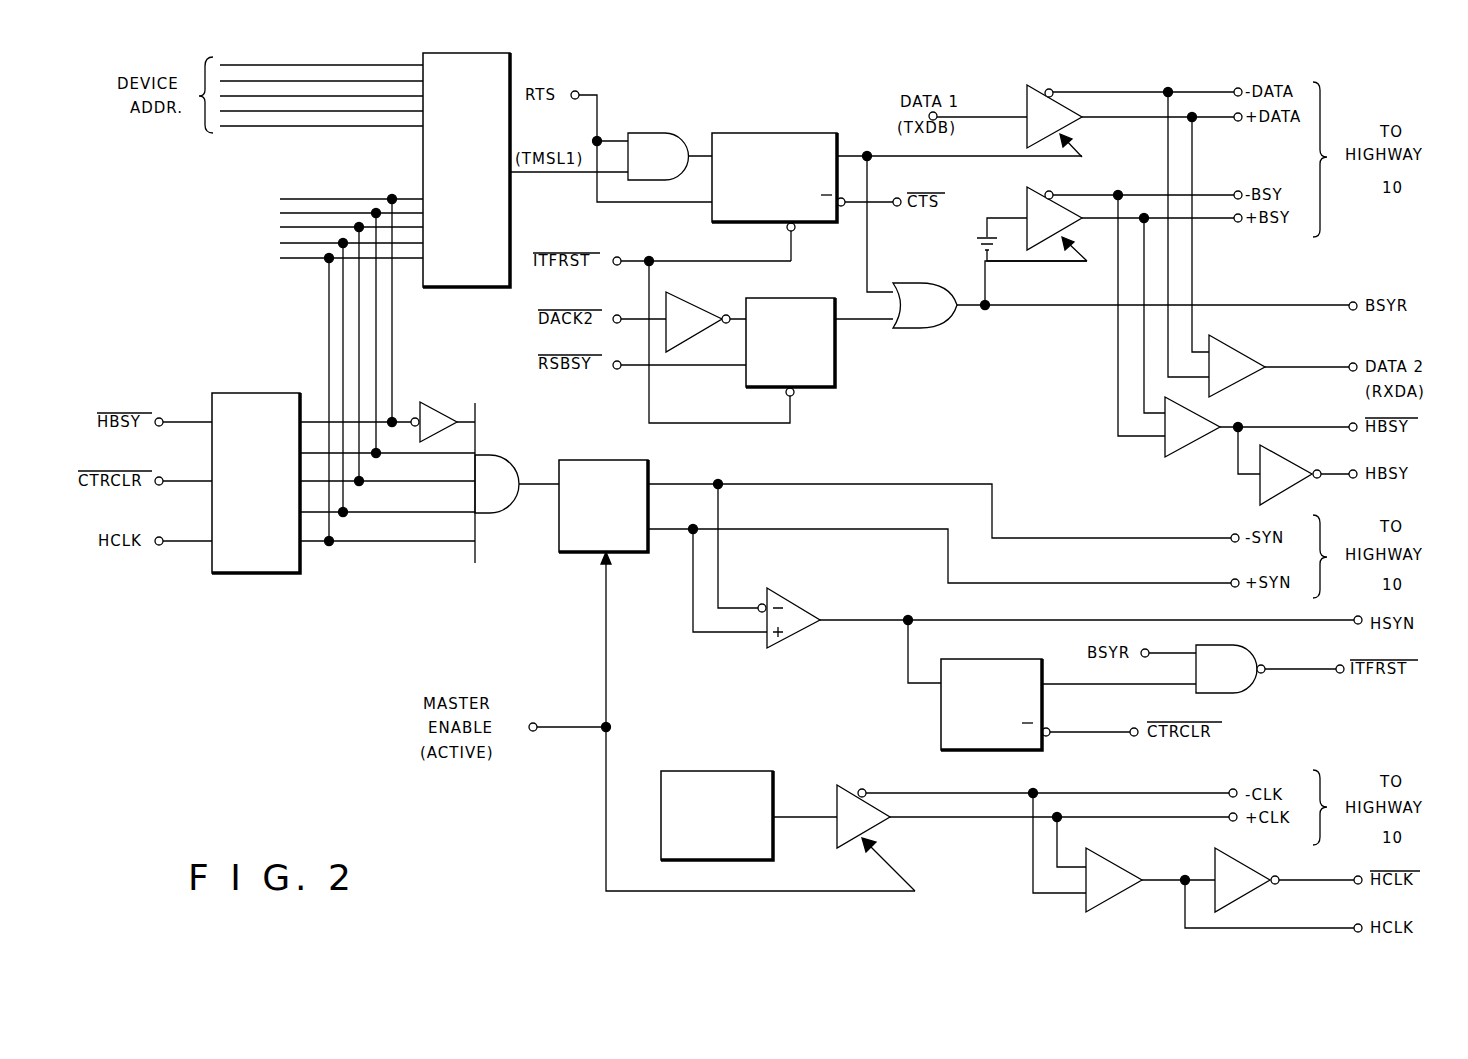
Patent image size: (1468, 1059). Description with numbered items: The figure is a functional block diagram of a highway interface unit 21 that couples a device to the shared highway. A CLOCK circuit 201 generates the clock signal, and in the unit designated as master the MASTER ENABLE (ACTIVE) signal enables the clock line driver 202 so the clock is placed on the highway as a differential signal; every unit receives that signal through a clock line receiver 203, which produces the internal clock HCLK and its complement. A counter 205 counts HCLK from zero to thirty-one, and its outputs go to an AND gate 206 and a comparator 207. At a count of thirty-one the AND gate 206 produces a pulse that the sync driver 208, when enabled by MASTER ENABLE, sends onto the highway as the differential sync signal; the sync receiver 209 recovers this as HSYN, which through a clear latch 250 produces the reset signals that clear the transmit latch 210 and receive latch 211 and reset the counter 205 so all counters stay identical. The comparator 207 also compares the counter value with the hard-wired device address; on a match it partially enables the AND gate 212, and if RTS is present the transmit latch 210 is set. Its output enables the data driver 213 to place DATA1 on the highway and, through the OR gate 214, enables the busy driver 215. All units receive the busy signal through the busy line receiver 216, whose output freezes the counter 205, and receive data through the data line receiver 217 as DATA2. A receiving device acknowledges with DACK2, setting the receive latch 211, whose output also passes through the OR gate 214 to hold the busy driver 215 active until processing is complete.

The highway interface unit 21 is at (655, 66).
The CLOCK circuit 201 is at (727, 771).
The clock line driver 202 is at (848, 785).
The clock line receiver 203 is at (1113, 860).
The counter 205 is at (270, 573).
The AND gate 206 is at (508, 455).
The comparator 207 is at (483, 53).
The sync driver 208 is at (587, 552).
The sync receiver 209 is at (798, 600).
The transmit latch 210 is at (803, 133).
The receive latch 211 is at (835, 376).
The AND gate 212 is at (662, 133).
The data driver 213 is at (1040, 85).
The OR gate 214 is at (940, 330).
The busy driver 215 is at (1045, 187).
The busy line receiver 216 is at (1183, 452).
The data line receiver 217 is at (1250, 347).
The clear latch 250 is at (940, 716).